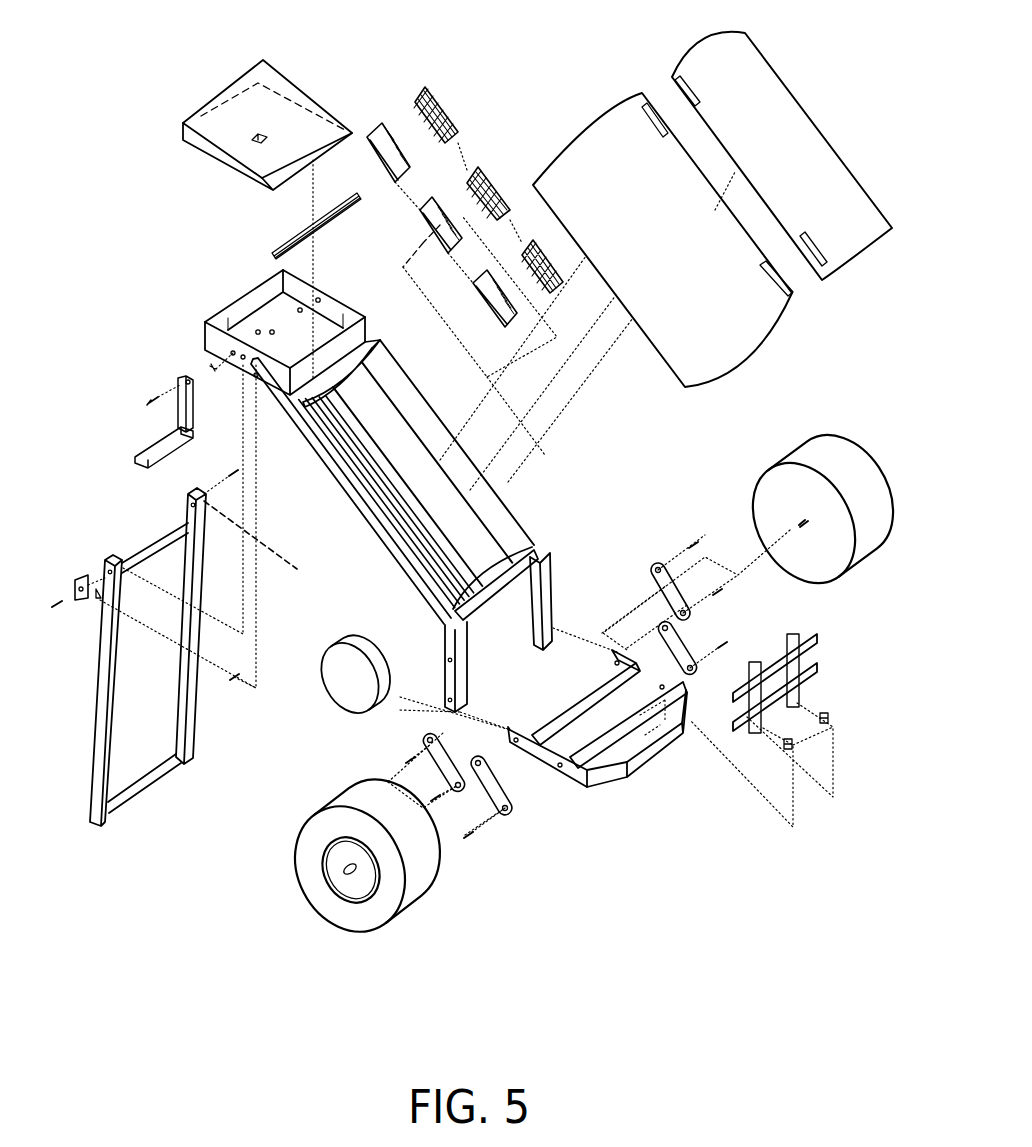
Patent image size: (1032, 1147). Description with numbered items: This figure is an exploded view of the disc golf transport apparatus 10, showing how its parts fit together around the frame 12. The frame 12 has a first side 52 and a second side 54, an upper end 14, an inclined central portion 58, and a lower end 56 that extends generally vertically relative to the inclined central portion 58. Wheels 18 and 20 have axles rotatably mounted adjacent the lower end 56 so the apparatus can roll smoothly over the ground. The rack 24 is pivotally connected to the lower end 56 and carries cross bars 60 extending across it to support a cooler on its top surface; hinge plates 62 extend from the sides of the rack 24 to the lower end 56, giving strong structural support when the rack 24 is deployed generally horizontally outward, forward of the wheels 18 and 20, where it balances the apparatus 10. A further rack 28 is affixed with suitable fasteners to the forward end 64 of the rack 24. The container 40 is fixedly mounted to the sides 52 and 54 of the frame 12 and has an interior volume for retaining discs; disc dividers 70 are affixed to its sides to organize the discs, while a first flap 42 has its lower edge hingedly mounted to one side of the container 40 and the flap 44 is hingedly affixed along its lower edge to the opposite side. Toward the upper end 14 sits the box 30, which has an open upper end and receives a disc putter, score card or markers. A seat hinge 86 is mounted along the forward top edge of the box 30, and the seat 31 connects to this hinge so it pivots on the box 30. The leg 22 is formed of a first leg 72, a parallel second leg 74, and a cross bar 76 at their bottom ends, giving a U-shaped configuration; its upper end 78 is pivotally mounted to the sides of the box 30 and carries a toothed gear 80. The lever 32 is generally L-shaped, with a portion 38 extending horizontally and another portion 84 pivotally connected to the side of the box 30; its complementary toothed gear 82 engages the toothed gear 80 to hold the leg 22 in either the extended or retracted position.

The disc golf transport apparatus 10 is at (530, 54).
The frame 12 is at (427, 526).
The upper end 14 is at (262, 400).
The wheel 18 is at (420, 895).
The wheel 20 is at (805, 460).
The leg 22 is at (151, 651).
The rack 24 is at (597, 741).
The rack 28 is at (820, 665).
The box 30 is at (238, 295).
The seat 31 is at (282, 80).
The lever 32 is at (165, 420).
The portion 38 is at (180, 446).
The container 40 is at (513, 522).
The first flap 42 is at (568, 157).
The flap 44 is at (712, 62).
The first side 52 is at (412, 596).
The second side 54 is at (543, 548).
The lower end 56 is at (556, 610).
The inclined central portion 58 is at (362, 520).
The cross bars 60 is at (572, 713).
The hinge plates 62 is at (640, 570).
The forward end 64 is at (640, 765).
The disc dividers 70 is at (440, 100).
The first leg 72 is at (110, 698).
The second leg 74 is at (205, 700).
The cross bar 76 is at (150, 785).
The upper end 78 is at (109, 548).
The toothed gear 80 is at (85, 580).
The complementary toothed gear 82 is at (196, 381).
The portion 84 is at (194, 412).
The seat hinge 86 is at (352, 215).